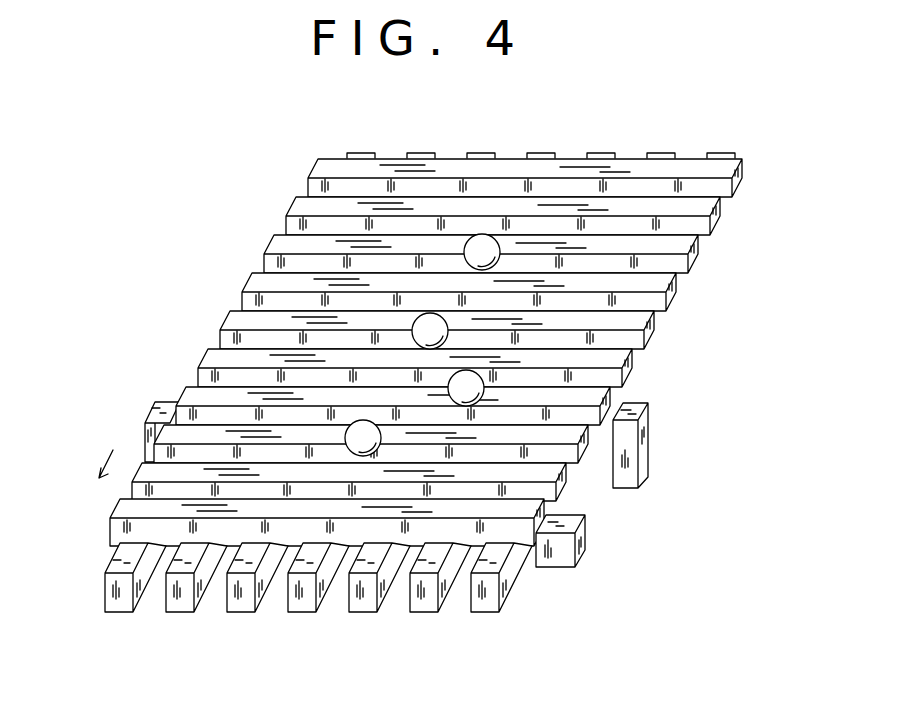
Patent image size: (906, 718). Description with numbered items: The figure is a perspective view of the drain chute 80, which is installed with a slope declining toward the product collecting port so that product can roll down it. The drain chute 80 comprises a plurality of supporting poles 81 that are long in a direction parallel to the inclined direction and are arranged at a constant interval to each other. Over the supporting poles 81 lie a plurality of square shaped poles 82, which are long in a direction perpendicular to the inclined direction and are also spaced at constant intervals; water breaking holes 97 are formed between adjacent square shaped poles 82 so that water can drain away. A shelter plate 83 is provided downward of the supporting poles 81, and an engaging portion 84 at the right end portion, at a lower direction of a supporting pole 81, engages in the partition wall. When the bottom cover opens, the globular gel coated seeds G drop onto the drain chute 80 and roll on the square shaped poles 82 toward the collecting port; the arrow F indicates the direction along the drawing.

The drain chute 80 is at (454, 395).
The supporting pole 81 is at (488, 605).
The square shaped pole 82 is at (683, 210).
The shelter plate 83 is at (637, 405).
The engaging portion 84 is at (564, 553).
The water breaking hole 97 is at (697, 232).
The globular gel coated seed G is at (481, 234).
The direction of force F is at (99, 454).